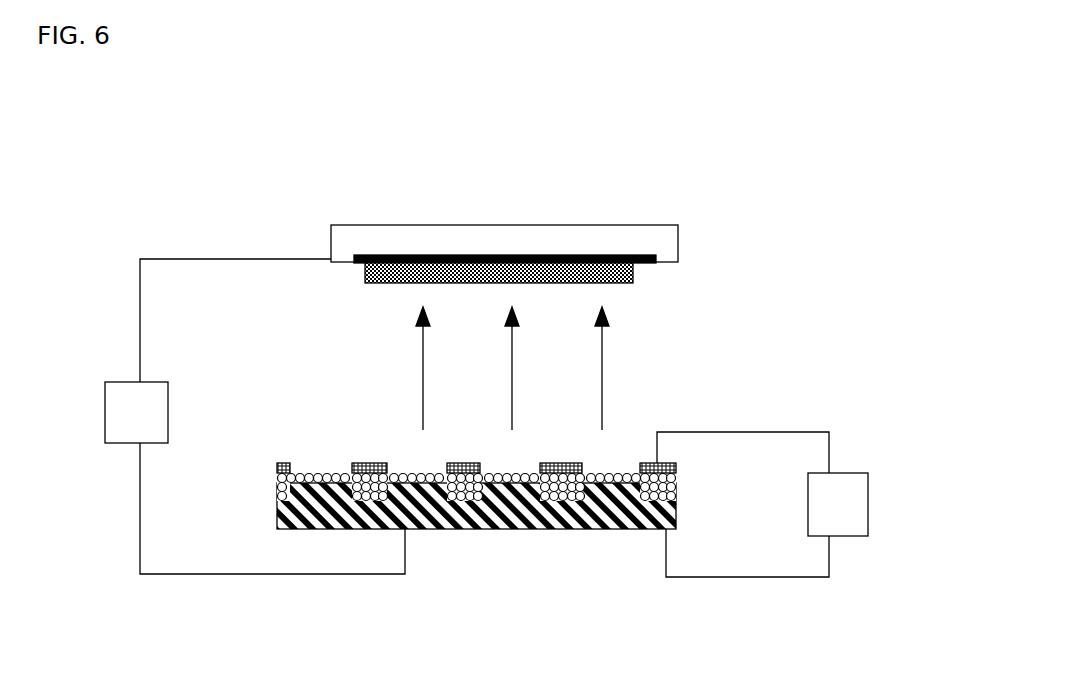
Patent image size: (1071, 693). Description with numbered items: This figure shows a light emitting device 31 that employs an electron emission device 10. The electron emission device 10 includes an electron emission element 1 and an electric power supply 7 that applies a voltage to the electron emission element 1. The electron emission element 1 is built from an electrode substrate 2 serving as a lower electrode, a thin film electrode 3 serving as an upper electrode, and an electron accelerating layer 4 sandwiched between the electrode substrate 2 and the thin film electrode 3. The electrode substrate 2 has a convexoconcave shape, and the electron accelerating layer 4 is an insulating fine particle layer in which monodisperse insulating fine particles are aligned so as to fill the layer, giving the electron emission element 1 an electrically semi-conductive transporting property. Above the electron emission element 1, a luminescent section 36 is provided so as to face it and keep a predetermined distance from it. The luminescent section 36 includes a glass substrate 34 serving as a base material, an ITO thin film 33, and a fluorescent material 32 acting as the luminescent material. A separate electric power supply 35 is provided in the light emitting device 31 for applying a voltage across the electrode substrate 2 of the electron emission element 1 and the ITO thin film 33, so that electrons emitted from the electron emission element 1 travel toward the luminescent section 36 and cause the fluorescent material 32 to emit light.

The light emitting device 31 is at (258, 147).
The electric power supply 35 is at (106, 413).
The luminescent section 36 is at (555, 260).
The glass substrate 34 is at (676, 236).
The ITO thin film 33 is at (656, 259).
The fluorescent material 32 is at (633, 280).
The electron emission device 10 is at (630, 447).
The electron emission element 1 is at (430, 495).
The electrode substrate 2 is at (275, 516).
The thin film electrode 3 is at (449, 460).
The electron accelerating layer 4 is at (277, 475).
The electric power supply 7 is at (869, 506).